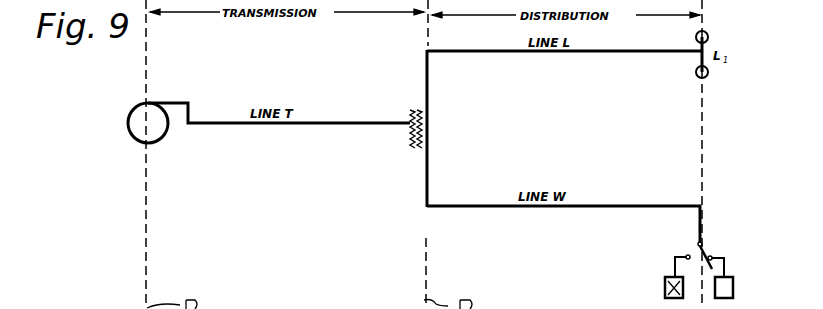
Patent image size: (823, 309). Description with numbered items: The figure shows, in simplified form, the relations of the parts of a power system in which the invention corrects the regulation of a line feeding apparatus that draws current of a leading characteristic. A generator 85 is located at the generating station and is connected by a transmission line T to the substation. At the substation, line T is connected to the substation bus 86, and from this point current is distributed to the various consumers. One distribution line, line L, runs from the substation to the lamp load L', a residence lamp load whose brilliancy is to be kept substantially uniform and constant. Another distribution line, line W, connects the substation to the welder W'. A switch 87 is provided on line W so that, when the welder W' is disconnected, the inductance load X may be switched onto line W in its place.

The generator 85 is at (128, 121).
The substation bus 86 is at (441, 88).
The switch 87 is at (702, 248).